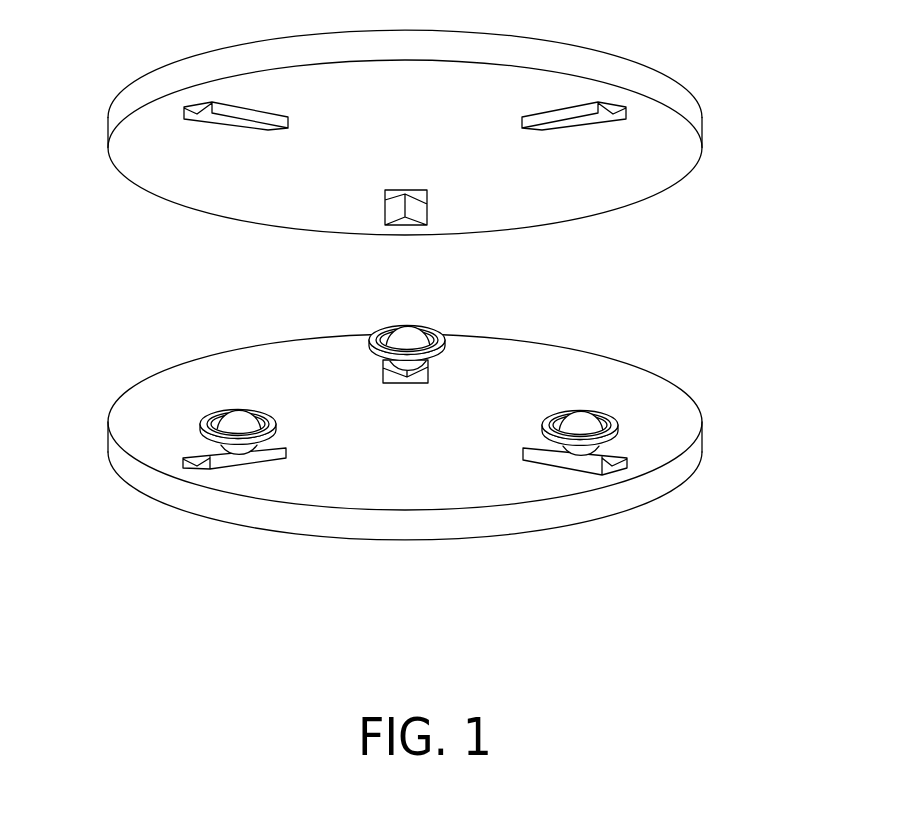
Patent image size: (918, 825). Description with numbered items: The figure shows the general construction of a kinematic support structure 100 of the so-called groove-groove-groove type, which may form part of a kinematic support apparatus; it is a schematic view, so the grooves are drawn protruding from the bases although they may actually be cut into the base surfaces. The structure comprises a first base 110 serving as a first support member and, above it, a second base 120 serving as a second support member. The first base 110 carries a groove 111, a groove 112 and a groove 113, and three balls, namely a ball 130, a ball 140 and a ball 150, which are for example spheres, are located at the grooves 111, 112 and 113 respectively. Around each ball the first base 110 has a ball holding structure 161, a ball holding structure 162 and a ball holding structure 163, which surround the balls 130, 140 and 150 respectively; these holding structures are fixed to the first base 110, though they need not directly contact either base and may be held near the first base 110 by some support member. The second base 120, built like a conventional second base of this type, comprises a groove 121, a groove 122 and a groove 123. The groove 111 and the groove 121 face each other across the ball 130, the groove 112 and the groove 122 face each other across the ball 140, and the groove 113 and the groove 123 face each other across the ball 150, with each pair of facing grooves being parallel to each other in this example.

The kinematic support structure 100 is at (412, 328).
The first base 110 is at (207, 500).
The groove 111 is at (203, 452).
The groove 112 is at (428, 363).
The groove 113 is at (605, 458).
The second base 120 is at (183, 75).
The groove 121 is at (222, 123).
The groove 122 is at (397, 203).
The groove 123 is at (570, 128).
The ball 130 is at (233, 425).
The ball 140 is at (407, 338).
The ball 150 is at (585, 427).
The ball holding structure 161 is at (243, 441).
The ball holding structure 162 is at (369, 336).
The ball holding structure 163 is at (571, 443).